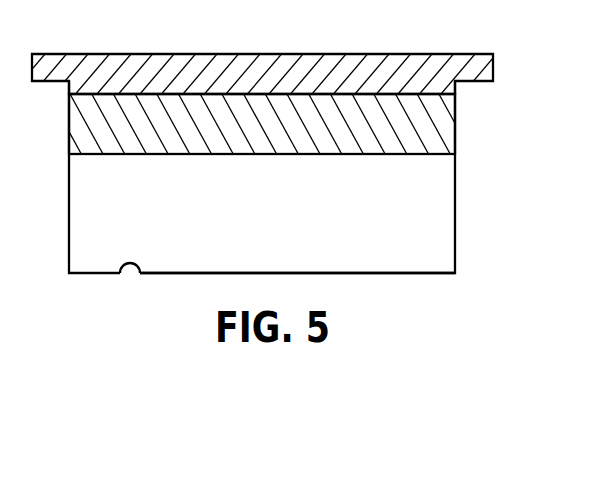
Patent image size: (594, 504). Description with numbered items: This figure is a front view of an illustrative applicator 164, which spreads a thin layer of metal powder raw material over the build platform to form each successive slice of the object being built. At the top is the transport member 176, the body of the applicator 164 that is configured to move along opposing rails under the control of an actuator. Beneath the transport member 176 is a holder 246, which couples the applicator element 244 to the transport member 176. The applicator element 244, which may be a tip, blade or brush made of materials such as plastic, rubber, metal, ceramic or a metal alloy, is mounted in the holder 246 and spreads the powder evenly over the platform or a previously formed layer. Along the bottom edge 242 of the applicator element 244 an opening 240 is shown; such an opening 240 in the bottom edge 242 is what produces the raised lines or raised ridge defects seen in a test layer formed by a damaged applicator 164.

The applicator 164 is at (297, 169).
The transport member 176 is at (282, 76).
The holder 246 is at (427, 127).
The applicator element 244 is at (281, 203).
The bottom edge 242 is at (362, 276).
The opening 240 is at (131, 261).